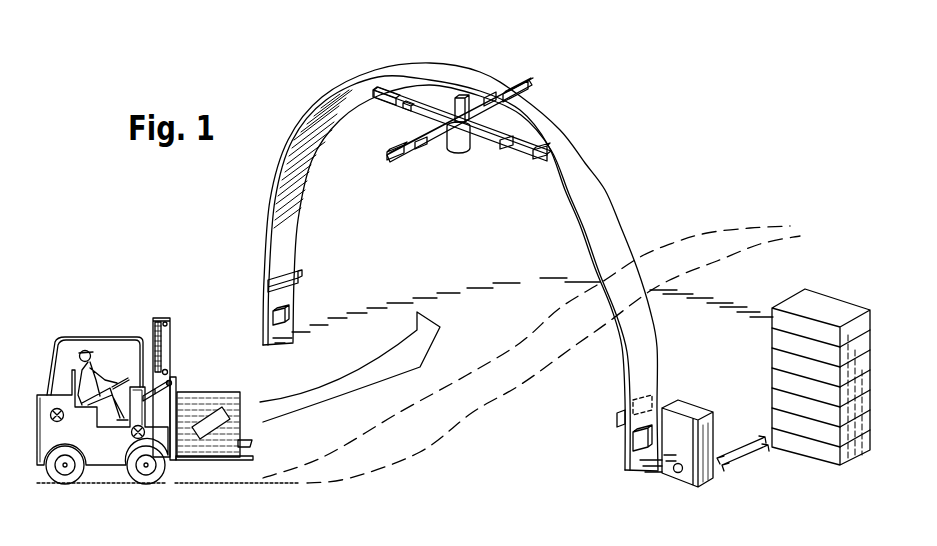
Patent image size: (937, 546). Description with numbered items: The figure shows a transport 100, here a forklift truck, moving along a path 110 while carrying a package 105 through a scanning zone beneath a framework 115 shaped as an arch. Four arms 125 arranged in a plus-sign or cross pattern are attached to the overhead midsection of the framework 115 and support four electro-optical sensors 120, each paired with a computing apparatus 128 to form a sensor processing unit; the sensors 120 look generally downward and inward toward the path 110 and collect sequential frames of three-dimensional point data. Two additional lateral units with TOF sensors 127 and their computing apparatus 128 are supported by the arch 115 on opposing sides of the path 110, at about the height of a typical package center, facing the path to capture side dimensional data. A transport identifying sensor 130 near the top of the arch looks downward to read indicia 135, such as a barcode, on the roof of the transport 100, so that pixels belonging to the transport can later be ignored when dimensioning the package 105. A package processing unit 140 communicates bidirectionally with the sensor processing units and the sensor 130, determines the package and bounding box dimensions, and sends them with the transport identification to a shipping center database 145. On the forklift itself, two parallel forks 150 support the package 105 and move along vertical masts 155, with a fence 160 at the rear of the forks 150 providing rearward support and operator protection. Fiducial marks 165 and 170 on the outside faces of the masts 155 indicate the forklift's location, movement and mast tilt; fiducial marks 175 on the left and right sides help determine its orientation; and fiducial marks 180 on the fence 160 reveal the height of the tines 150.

The transport 100 is at (50, 318).
The package 105 is at (240, 443).
The path 110 is at (470, 397).
The framework 115 is at (610, 206).
The electro-optical sensors 120 is at (387, 158).
The arms 125 is at (445, 92).
The TOF sensors 127 is at (302, 278).
The computing apparatus 128 is at (408, 103).
The transport identifying sensor 130 is at (460, 151).
The indicia 135 is at (108, 337).
The package processing unit 140 is at (687, 406).
The shipping center database 145 is at (812, 307).
The forks 150 is at (200, 461).
The vertical masts 155 is at (172, 333).
The fence 160 is at (175, 387).
The fiducial marks 165 is at (150, 380).
The fiducial marks 170 is at (164, 320).
The fiducial marks 175 is at (133, 440).
The fiducial marks 180 is at (177, 412).